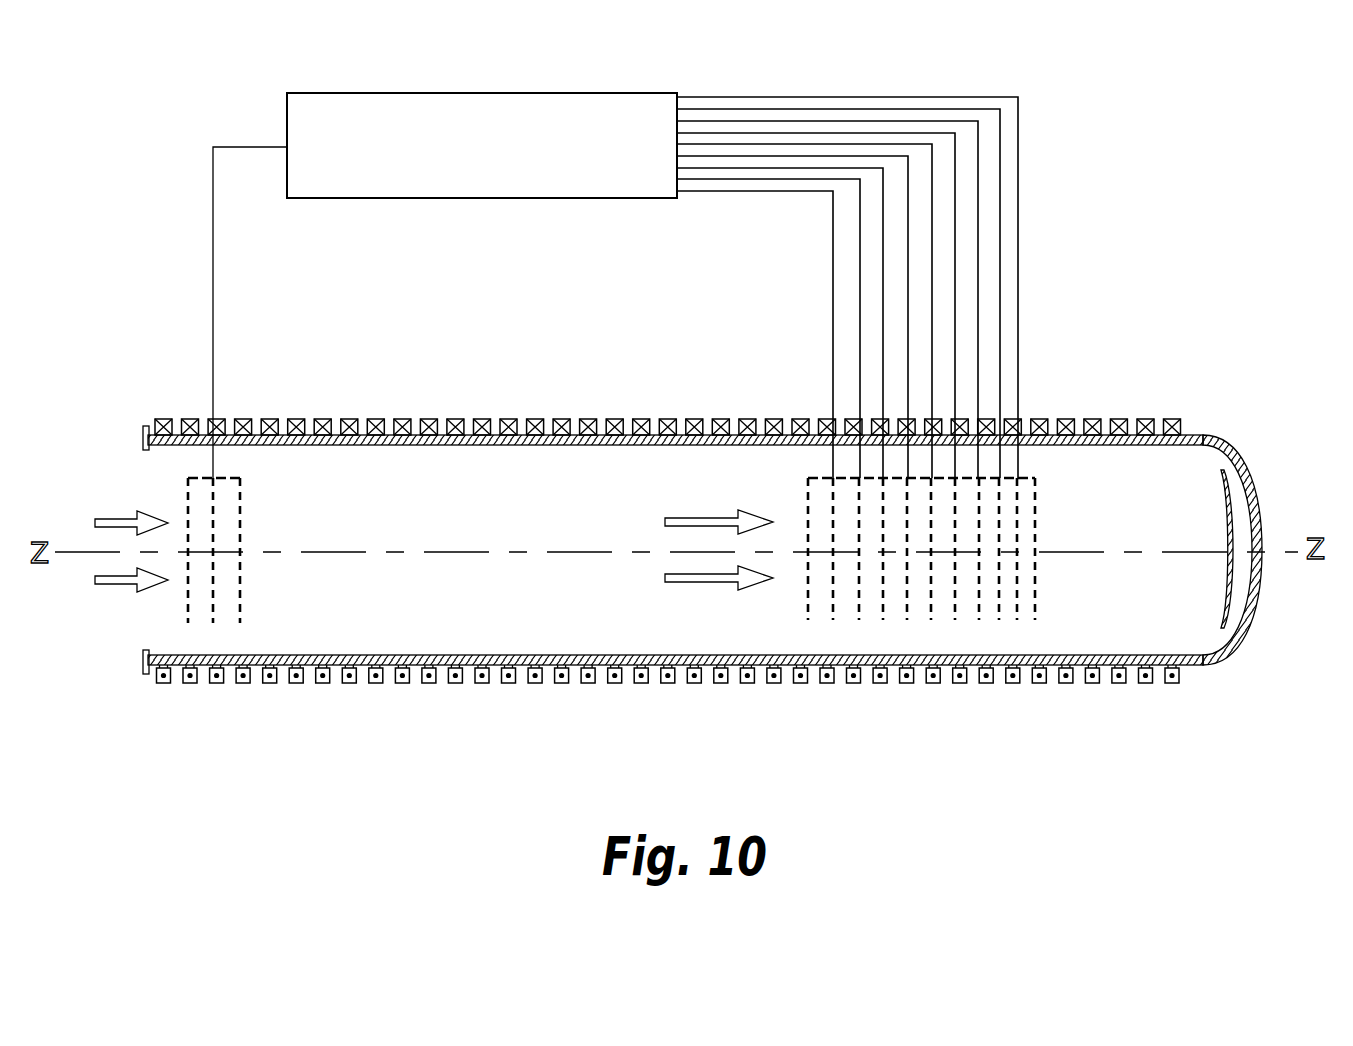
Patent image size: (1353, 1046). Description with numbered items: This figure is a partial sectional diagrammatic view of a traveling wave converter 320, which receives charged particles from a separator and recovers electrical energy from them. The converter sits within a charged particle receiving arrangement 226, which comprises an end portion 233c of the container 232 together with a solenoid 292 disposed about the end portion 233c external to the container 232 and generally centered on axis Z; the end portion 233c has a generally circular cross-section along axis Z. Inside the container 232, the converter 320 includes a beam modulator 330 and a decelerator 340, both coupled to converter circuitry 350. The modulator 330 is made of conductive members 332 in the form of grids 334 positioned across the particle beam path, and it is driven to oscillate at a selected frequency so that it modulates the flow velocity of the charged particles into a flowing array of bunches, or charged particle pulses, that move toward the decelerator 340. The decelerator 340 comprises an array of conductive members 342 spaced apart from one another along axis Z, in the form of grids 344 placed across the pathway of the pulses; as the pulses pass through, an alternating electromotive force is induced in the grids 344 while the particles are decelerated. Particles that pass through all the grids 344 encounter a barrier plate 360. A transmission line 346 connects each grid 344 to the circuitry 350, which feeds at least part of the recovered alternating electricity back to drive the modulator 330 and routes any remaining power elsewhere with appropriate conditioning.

The converter circuitry 350 is at (547, 198).
The transmission line 346 is at (833, 273).
The charged particle receiving arrangement 226 is at (1158, 432).
The solenoid 292 is at (375, 688).
The container 232 is at (1157, 688).
The end portion 233c is at (1245, 628).
The barrier plate 360 is at (1230, 510).
The beam modulator 330 is at (226, 468).
The conductive members 332 is at (258, 617).
The grids 334 is at (188, 525).
The traveling wave converter 320 is at (165, 607).
The decelerator 340 is at (805, 491).
The conductive members 342 is at (1050, 499).
The grids 344 is at (955, 567).